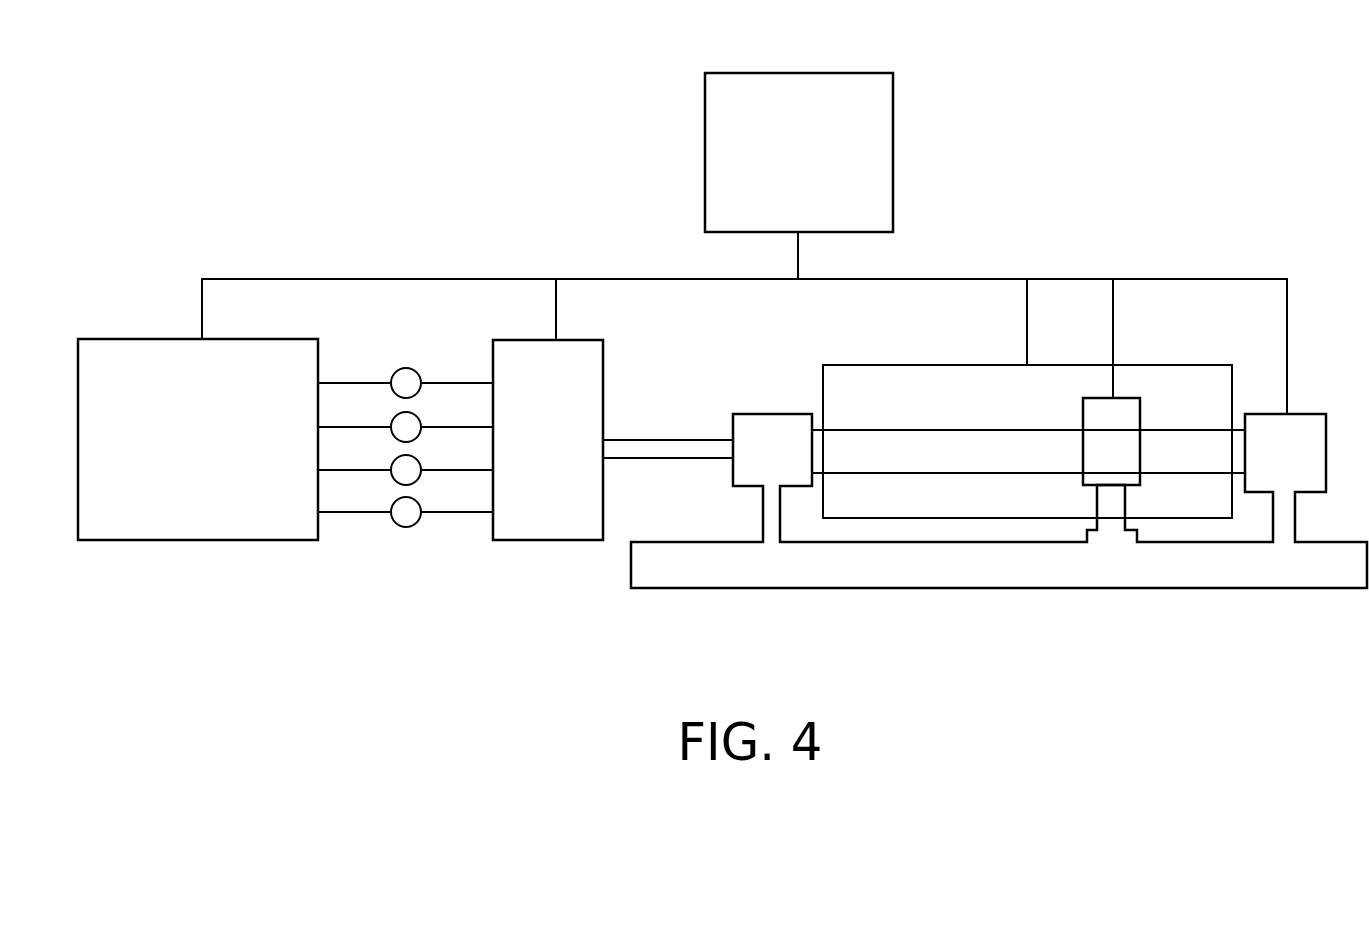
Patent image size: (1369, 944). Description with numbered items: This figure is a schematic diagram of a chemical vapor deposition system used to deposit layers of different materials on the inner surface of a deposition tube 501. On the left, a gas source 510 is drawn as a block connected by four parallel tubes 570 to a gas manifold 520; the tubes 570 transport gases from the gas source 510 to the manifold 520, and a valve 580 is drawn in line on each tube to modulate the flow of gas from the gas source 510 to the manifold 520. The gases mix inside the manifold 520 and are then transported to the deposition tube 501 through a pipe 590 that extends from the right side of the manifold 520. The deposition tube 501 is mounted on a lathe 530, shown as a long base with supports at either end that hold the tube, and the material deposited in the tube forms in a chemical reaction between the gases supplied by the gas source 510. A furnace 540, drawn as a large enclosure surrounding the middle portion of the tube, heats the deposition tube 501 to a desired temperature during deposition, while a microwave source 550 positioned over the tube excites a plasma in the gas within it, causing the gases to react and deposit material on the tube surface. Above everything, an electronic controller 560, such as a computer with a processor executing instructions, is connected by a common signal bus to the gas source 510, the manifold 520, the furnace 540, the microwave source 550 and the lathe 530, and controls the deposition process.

The deposition tube 501 is at (928, 473).
The gas source 510 is at (171, 451).
The gas manifold 520 is at (524, 441).
The lathe 530 is at (697, 590).
The furnace 540 is at (942, 365).
The microwave source 550 is at (1125, 398).
The electronic controller 560 is at (780, 154).
The tubes 570 is at (396, 150).
The valves 580 is at (421, 419).
The pipe 590 is at (663, 440).